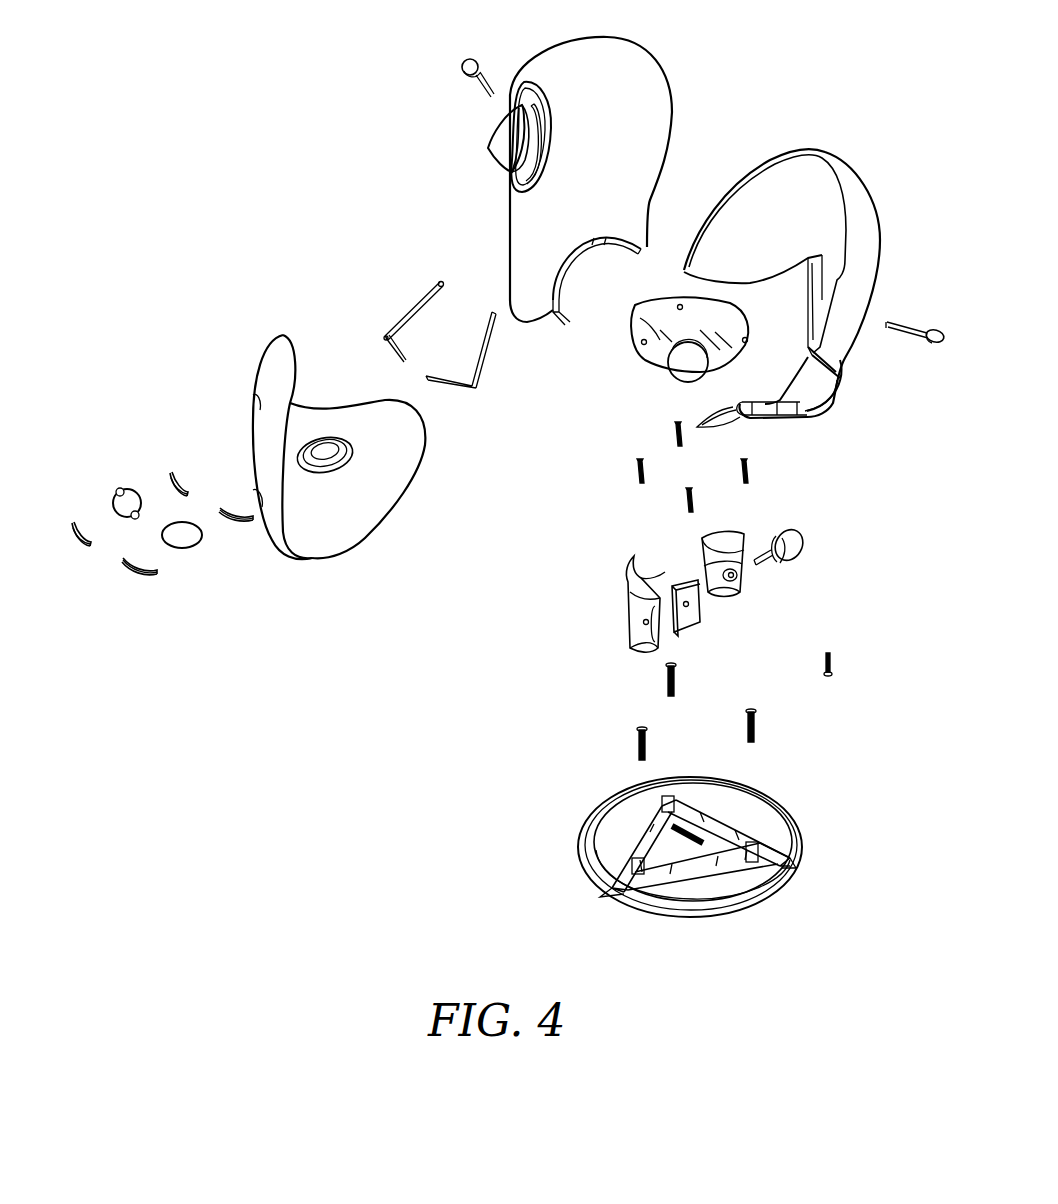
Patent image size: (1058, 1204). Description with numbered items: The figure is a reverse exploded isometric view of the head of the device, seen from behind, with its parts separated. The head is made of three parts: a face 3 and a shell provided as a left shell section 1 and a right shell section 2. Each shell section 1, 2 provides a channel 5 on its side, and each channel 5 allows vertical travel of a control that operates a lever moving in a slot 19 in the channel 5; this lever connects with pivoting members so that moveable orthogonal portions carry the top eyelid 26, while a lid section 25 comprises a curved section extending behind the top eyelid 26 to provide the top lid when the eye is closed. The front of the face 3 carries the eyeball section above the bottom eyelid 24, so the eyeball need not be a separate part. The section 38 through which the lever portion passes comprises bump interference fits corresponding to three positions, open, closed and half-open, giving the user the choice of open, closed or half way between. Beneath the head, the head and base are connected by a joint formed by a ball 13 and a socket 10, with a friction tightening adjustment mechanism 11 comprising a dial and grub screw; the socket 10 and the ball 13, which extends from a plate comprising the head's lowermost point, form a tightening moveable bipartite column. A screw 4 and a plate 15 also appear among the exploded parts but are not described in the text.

The left shell section 1 is at (801, 225).
The right shell section 2 is at (616, 125).
The face 3 is at (331, 401).
The screw 4 is at (460, 67).
The channel 5 is at (519, 184).
The socket 10 is at (615, 628).
The friction tightening adjustment mechanism 11 is at (780, 572).
The ball 13 is at (688, 383).
The mounting plate 15 is at (668, 303).
The slot 19 is at (519, 107).
The bottom eyelid 24 is at (172, 470).
The lid section 25 is at (190, 548).
The top eyelid 26 is at (76, 543).
The section 38 is at (130, 490).